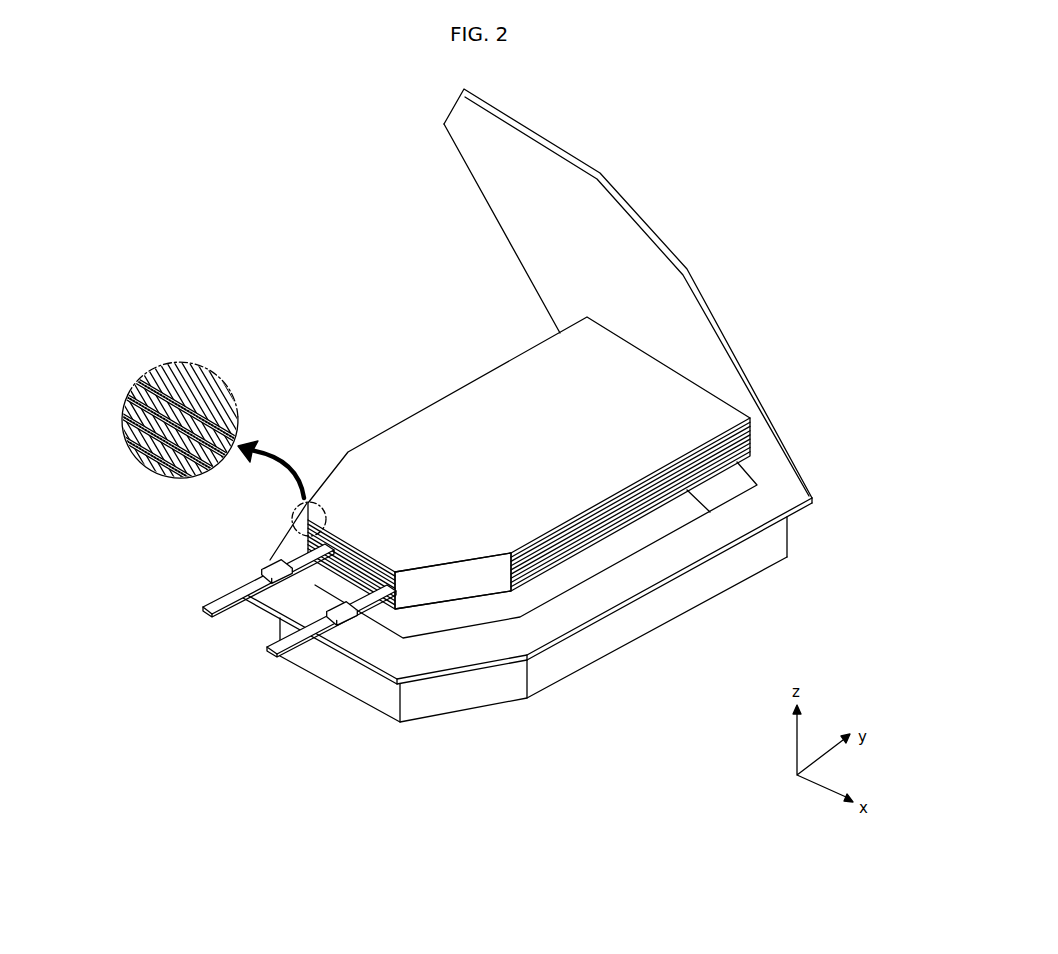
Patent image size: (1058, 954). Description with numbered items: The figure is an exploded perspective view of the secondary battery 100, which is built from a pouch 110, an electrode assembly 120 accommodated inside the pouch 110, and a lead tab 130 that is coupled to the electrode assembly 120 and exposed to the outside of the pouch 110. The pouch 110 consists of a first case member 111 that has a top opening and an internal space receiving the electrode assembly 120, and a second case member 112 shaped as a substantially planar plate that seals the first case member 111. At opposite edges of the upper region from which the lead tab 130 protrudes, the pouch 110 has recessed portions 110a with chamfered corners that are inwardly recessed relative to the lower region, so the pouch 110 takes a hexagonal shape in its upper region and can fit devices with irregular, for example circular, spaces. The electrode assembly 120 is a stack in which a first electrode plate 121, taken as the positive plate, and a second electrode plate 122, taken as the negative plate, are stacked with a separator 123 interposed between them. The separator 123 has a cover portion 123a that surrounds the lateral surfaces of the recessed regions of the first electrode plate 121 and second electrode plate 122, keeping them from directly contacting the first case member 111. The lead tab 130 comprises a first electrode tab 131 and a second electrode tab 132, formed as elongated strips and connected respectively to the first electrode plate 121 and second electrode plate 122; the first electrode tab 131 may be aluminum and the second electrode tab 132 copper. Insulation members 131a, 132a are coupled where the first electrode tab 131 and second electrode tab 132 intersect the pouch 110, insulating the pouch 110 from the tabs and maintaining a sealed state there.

The secondary battery 100 is at (802, 128).
The pouch 110 is at (875, 440).
The recessed portions 110a is at (453, 106).
The first case member 111 is at (763, 528).
The second case member 112 is at (790, 447).
The electrode assembly 120 is at (478, 370).
The first electrode plate 121 is at (120, 410).
The second electrode plate 122 is at (136, 384).
The separator 123 is at (237, 436).
The cover portion 123a is at (483, 580).
The lead tab 130 is at (141, 590).
The first electrode tab 131 is at (203, 607).
The insulation member 131a is at (270, 562).
The second electrode tab 132 is at (266, 649).
The insulation member 132a is at (355, 620).